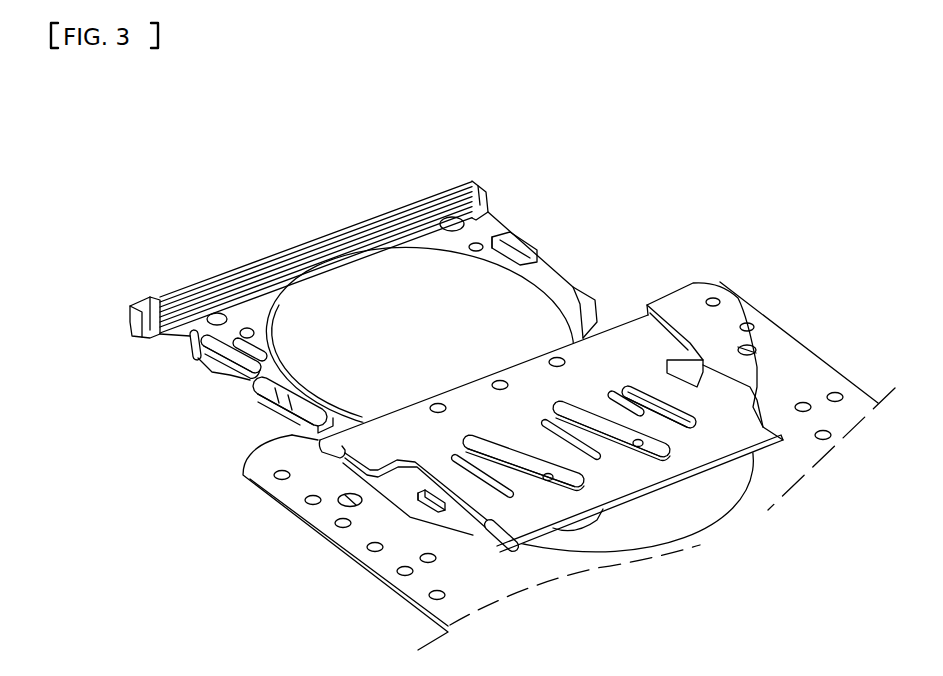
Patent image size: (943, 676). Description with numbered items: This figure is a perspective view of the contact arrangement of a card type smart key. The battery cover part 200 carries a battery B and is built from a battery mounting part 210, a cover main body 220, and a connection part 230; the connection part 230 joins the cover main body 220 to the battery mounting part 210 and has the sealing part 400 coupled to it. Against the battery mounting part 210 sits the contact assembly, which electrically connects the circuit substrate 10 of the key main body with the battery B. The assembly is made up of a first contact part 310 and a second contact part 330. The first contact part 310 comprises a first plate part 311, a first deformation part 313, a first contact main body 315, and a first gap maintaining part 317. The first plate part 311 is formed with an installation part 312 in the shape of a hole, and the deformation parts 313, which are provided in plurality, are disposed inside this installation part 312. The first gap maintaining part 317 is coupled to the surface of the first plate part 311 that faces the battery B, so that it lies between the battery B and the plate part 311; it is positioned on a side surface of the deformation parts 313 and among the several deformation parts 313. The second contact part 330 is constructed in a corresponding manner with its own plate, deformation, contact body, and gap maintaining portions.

The circuit substrate 10 is at (283, 492).
The battery cover part 200 is at (498, 98).
The battery mounting part 210 is at (433, 210).
The cover main body 220 is at (370, 213).
The connection part 230 is at (440, 240).
The sealing part 400 is at (317, 260).
The first contact part 310 is at (837, 150).
The first plate part 311 is at (620, 353).
The installation part 312 is at (633, 427).
The first deformation part 313 is at (612, 423).
The first contact main body 315 is at (728, 385).
The first gap maintaining part 317 is at (712, 415).
The second contact part 330 is at (657, 517).
The battery B is at (215, 365).